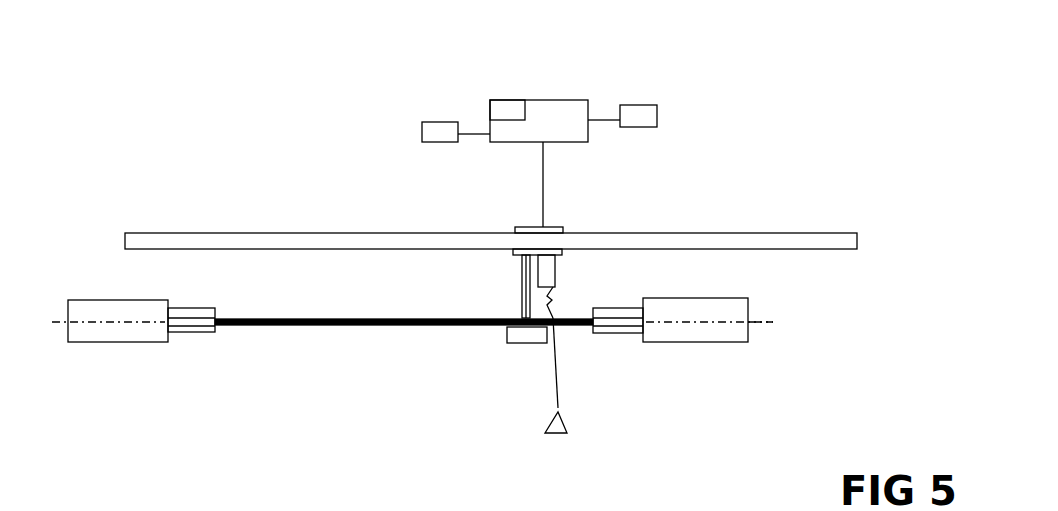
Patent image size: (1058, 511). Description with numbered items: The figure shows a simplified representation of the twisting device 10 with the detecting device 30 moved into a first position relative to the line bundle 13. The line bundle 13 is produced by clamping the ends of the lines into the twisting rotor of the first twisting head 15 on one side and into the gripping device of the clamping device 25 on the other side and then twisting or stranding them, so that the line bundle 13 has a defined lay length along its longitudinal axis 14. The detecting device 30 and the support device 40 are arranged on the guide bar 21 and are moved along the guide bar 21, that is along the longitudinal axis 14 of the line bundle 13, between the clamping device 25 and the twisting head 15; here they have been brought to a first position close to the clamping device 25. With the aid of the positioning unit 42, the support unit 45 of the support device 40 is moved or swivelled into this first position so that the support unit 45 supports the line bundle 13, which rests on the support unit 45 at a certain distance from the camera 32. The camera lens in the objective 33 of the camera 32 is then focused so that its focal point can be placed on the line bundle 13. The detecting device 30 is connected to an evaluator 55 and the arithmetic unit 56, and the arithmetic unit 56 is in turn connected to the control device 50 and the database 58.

The twisting device 10 is at (122, 84).
The line bundle 13 is at (250, 328).
The longitudinal axis 14 is at (775, 322).
The first twisting head 15 is at (115, 352).
The guide bar 21 is at (148, 238).
The clamping device 25 is at (663, 357).
The detecting device 30 is at (583, 277).
The camera 32 is at (572, 274).
The objective 33 is at (556, 306).
The support device 40 is at (517, 284).
The positioning unit 42 is at (517, 302).
The support unit 45 is at (522, 344).
The control device 50 is at (638, 114).
The evaluator 55 is at (563, 112).
The arithmetic unit 56 is at (497, 104).
The database 58 is at (430, 125).